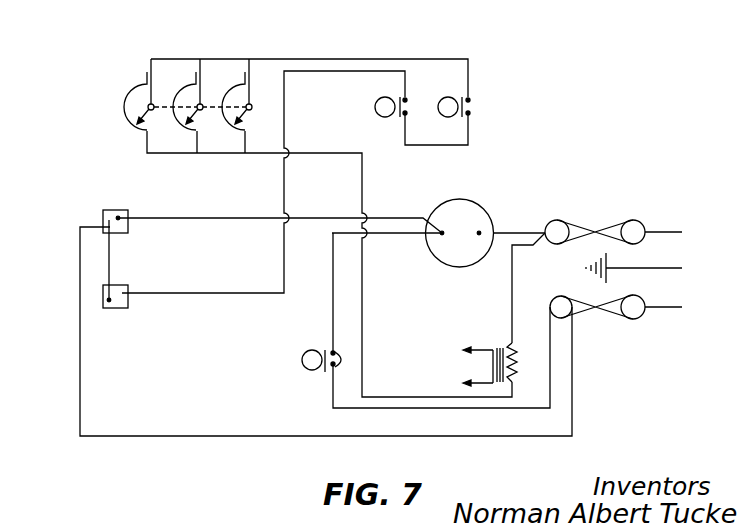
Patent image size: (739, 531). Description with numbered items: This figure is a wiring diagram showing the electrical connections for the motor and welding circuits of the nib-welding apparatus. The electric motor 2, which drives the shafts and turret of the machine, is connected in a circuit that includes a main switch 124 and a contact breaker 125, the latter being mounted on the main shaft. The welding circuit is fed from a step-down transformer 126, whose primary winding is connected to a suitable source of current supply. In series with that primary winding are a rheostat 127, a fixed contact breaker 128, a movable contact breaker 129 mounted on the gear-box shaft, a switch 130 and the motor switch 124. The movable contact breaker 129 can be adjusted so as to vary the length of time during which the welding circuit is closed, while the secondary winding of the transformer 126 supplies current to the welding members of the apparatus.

The rheostat 127 is at (180, 88).
The movable contact breaker 129 is at (383, 96).
The fixed contact breaker 128 is at (450, 96).
The main switch 124 is at (120, 210).
The switch 130 is at (120, 309).
The electric motor 2 is at (467, 207).
The contact breaker 125 is at (332, 366).
The step-down transformer 126 is at (503, 346).